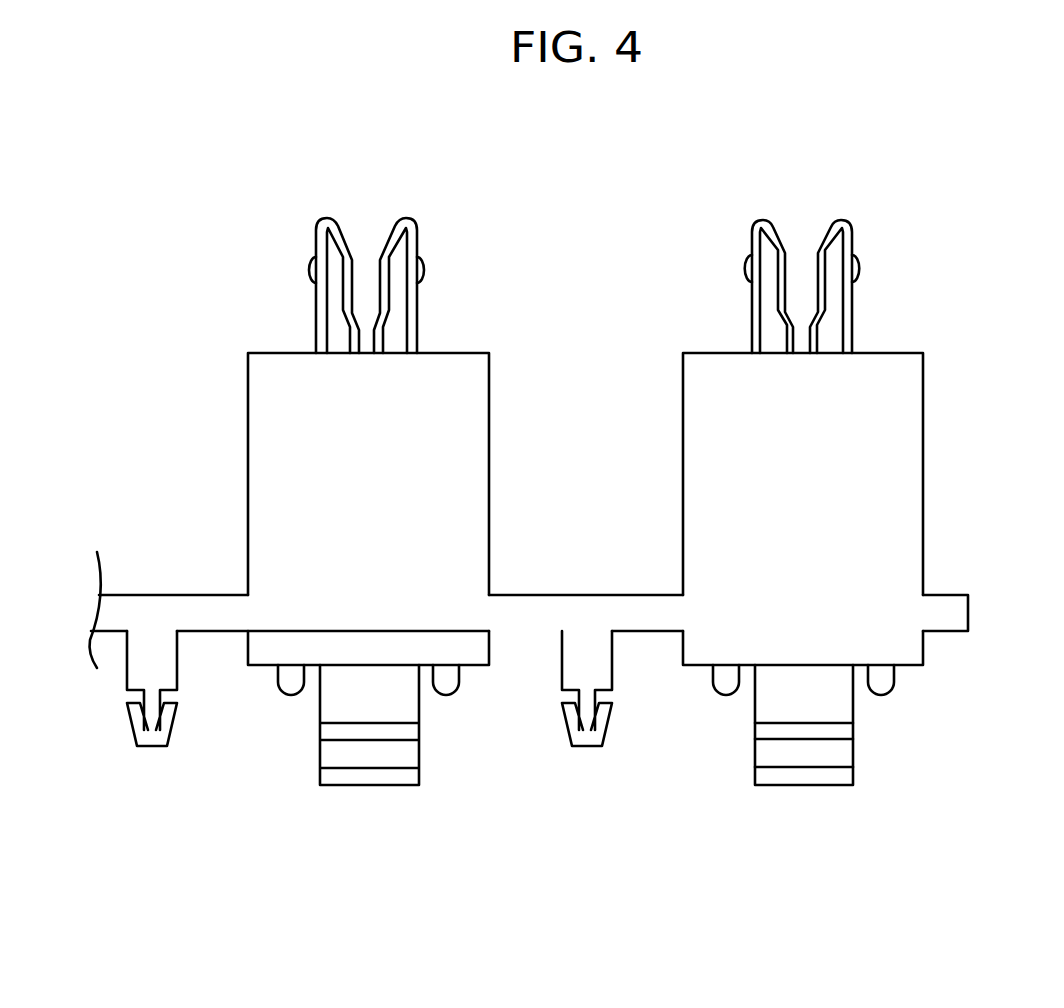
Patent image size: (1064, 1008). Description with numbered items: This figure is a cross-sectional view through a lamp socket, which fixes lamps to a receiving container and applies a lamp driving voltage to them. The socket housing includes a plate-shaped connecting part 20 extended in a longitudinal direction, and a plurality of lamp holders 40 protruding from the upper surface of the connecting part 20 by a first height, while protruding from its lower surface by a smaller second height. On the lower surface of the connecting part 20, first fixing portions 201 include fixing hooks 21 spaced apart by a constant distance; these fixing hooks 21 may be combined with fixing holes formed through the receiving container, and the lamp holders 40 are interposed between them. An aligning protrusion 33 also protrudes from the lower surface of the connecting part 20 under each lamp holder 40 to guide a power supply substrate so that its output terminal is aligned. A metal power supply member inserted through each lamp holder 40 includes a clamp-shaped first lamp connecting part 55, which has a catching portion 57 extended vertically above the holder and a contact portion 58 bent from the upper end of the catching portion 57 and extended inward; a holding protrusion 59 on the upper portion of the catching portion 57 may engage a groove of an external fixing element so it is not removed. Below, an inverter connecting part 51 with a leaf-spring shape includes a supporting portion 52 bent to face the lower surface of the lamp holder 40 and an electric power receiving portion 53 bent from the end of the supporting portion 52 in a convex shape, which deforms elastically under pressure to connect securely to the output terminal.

The connecting part 20 is at (947, 608).
The fixing hook 21 is at (407, 727).
The first fixing portion 201 is at (610, 747).
The aligning protrusion 33 is at (885, 675).
The lamp holder 40 is at (888, 468).
The inverter connecting part 51 is at (804, 783).
The supporting portion 52 is at (780, 777).
The electric power receiving portion 53 is at (832, 732).
The first lamp connecting part 55 is at (745, 239).
The catching portion 57 is at (758, 253).
The contact portion 58 is at (785, 248).
The holding protrusion 59 is at (748, 268).